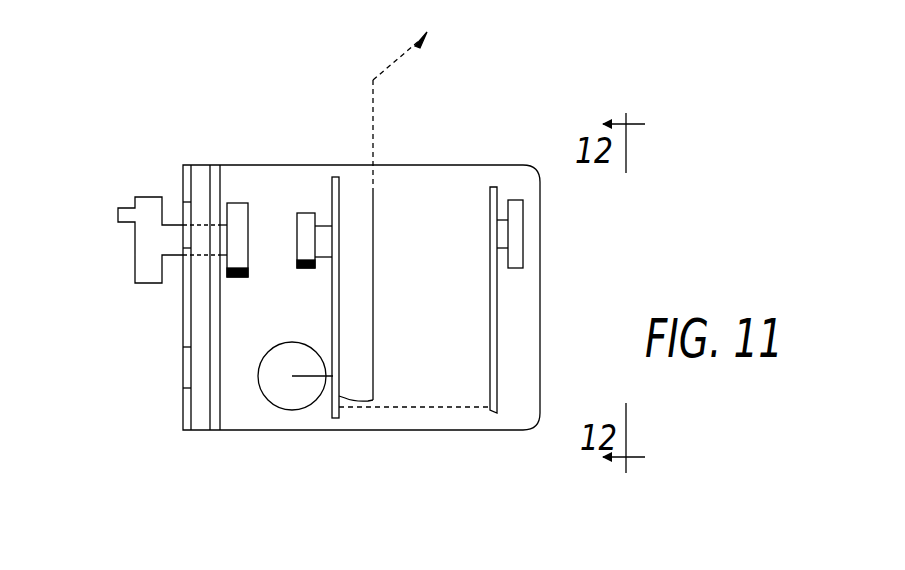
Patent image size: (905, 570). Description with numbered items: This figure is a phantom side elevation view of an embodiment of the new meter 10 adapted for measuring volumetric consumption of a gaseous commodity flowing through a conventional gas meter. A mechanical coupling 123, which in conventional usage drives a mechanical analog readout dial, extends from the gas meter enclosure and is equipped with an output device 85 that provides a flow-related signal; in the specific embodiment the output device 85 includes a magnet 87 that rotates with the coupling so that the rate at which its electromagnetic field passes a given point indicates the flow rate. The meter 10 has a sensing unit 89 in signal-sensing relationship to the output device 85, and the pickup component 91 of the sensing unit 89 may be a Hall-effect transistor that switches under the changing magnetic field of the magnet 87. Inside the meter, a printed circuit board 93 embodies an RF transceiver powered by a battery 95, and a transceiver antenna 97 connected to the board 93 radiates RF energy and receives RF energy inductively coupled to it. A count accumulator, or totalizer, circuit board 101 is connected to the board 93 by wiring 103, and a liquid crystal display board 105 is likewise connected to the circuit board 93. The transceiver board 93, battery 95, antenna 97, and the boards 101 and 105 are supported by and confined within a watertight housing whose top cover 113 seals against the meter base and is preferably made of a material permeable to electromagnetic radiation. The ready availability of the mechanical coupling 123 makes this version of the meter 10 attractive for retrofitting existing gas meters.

The meter 10 is at (148, 158).
The output device 85 is at (242, 203).
The magnet 87 is at (240, 278).
The sensing unit 89 is at (300, 213).
The pickup component 91 is at (306, 272).
The printed circuit board 93 is at (336, 420).
The battery 95 is at (285, 412).
The transceiver antenna 97 is at (375, 305).
The count accumulator circuit board 101 is at (498, 412).
The wiring 103 is at (436, 408).
The liquid crystal display board 105 is at (523, 256).
The top cover 113 is at (405, 165).
The mechanical coupling 123 is at (135, 270).